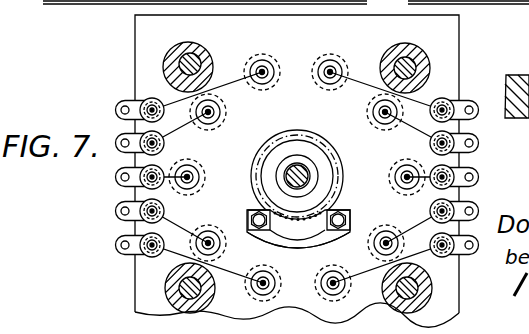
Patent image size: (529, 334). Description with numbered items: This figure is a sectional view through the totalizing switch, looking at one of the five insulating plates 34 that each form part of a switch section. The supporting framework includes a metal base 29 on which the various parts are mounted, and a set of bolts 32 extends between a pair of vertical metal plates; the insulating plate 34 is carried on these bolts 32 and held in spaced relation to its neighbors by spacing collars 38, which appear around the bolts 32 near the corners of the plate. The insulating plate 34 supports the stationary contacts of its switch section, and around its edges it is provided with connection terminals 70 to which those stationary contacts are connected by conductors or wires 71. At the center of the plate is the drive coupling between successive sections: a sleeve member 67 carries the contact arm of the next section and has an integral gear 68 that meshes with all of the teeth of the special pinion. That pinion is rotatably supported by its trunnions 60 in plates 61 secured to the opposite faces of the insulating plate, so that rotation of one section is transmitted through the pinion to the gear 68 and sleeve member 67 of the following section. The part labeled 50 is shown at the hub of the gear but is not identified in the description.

The metal base 29 is at (528, 11).
The insulating plate 34 is at (459, 40).
The spacing collars 38 is at (165, 54).
The bolts 32 is at (197, 62).
The connection terminals 70 is at (122, 209).
The conductors or wires 71 is at (183, 100).
The integral gear 68 is at (322, 150).
The hub 50 is at (284, 179).
The sleeve member 67 is at (289, 166).
The trunnions 60 is at (298, 229).
The plates 61 is at (312, 247).